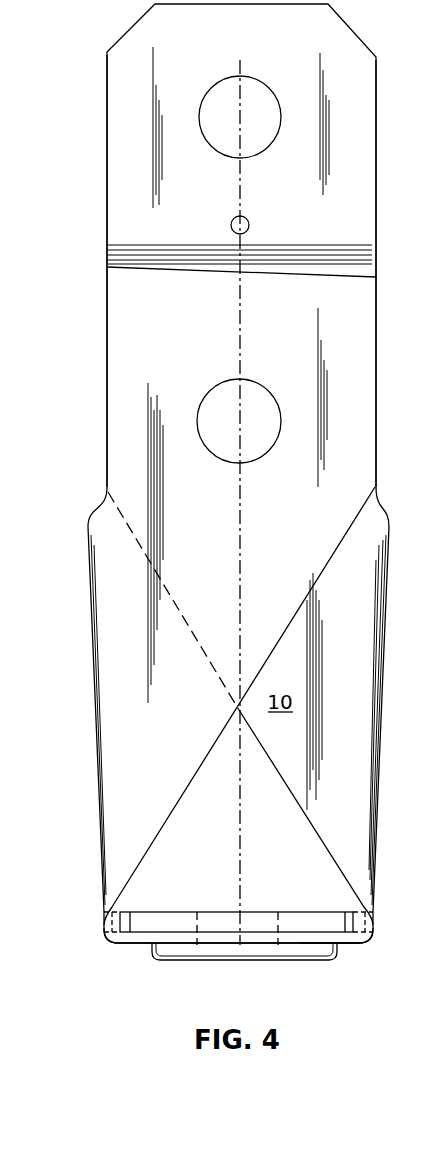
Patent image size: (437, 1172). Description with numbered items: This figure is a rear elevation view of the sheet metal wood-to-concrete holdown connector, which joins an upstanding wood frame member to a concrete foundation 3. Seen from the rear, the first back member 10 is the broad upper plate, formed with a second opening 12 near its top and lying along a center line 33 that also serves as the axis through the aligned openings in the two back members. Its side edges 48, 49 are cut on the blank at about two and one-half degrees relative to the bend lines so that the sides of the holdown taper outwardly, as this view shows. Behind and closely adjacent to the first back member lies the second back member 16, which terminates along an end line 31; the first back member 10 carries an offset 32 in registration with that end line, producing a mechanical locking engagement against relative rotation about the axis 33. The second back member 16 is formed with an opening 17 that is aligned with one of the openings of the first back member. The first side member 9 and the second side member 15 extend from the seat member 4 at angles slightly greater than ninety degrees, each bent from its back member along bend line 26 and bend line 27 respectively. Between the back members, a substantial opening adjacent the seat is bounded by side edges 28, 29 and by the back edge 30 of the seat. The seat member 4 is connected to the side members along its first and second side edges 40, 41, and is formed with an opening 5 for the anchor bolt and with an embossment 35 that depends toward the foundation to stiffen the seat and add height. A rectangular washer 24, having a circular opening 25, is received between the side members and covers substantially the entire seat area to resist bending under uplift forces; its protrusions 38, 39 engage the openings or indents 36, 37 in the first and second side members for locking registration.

The first back member 10 is at (380, 110).
The second opening 12 is at (250, 92).
The side edge 49 is at (376, 150).
The side edge 48 is at (107, 360).
The offset 32 is at (343, 260).
The end line 31 is at (328, 270).
The concrete foundation 3 is at (430, 253).
The second back member 16 is at (204, 333).
The opening 17 is at (252, 388).
The center line 33 is at (240, 510).
The second side member 15 is at (93, 643).
The bend line 26 is at (97, 698).
The first side member 9 is at (387, 615).
The bend line 27 is at (382, 663).
The side edge 29 is at (195, 787).
The side edge 28 is at (273, 770).
The rectangular washer 24 is at (162, 911).
The opening 5 is at (203, 938).
The circular opening 25 is at (200, 918).
The protrusion 39 is at (105, 922).
The opening or indent 37 is at (108, 928).
The protrusion 38 is at (375, 918).
The opening or indent 36 is at (373, 923).
The second side edge 41 is at (112, 942).
The first side edge 40 is at (360, 940).
The seat member 4 is at (142, 945).
The embossment 35 is at (272, 957).
The back edge 30 is at (335, 938).